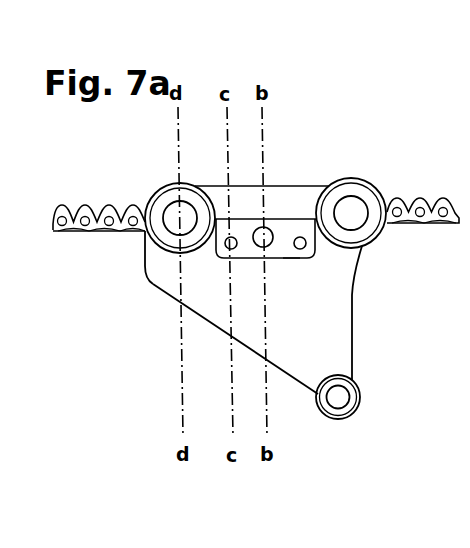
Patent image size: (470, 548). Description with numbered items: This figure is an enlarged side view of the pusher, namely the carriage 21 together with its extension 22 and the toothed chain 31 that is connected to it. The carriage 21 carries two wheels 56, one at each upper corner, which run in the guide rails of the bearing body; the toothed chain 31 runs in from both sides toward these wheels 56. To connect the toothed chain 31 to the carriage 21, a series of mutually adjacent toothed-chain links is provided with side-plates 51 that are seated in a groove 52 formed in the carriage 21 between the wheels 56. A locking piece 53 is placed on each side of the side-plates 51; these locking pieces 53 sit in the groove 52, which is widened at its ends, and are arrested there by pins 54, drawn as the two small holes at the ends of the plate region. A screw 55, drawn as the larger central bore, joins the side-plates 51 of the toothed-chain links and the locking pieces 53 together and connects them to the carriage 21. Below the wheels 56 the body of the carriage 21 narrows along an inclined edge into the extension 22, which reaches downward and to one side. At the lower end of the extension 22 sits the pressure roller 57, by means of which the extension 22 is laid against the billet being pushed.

The carriage 21 is at (162, 263).
The extension 22 is at (285, 340).
The toothed chain 31 is at (113, 206).
The side-plates 51 is at (288, 252).
The groove 52 is at (243, 256).
The locking piece 53 is at (290, 219).
The pins 54 is at (221, 257).
The screw 55 is at (266, 236).
The wheels 56 is at (163, 188).
The pressure roller 57 is at (360, 397).